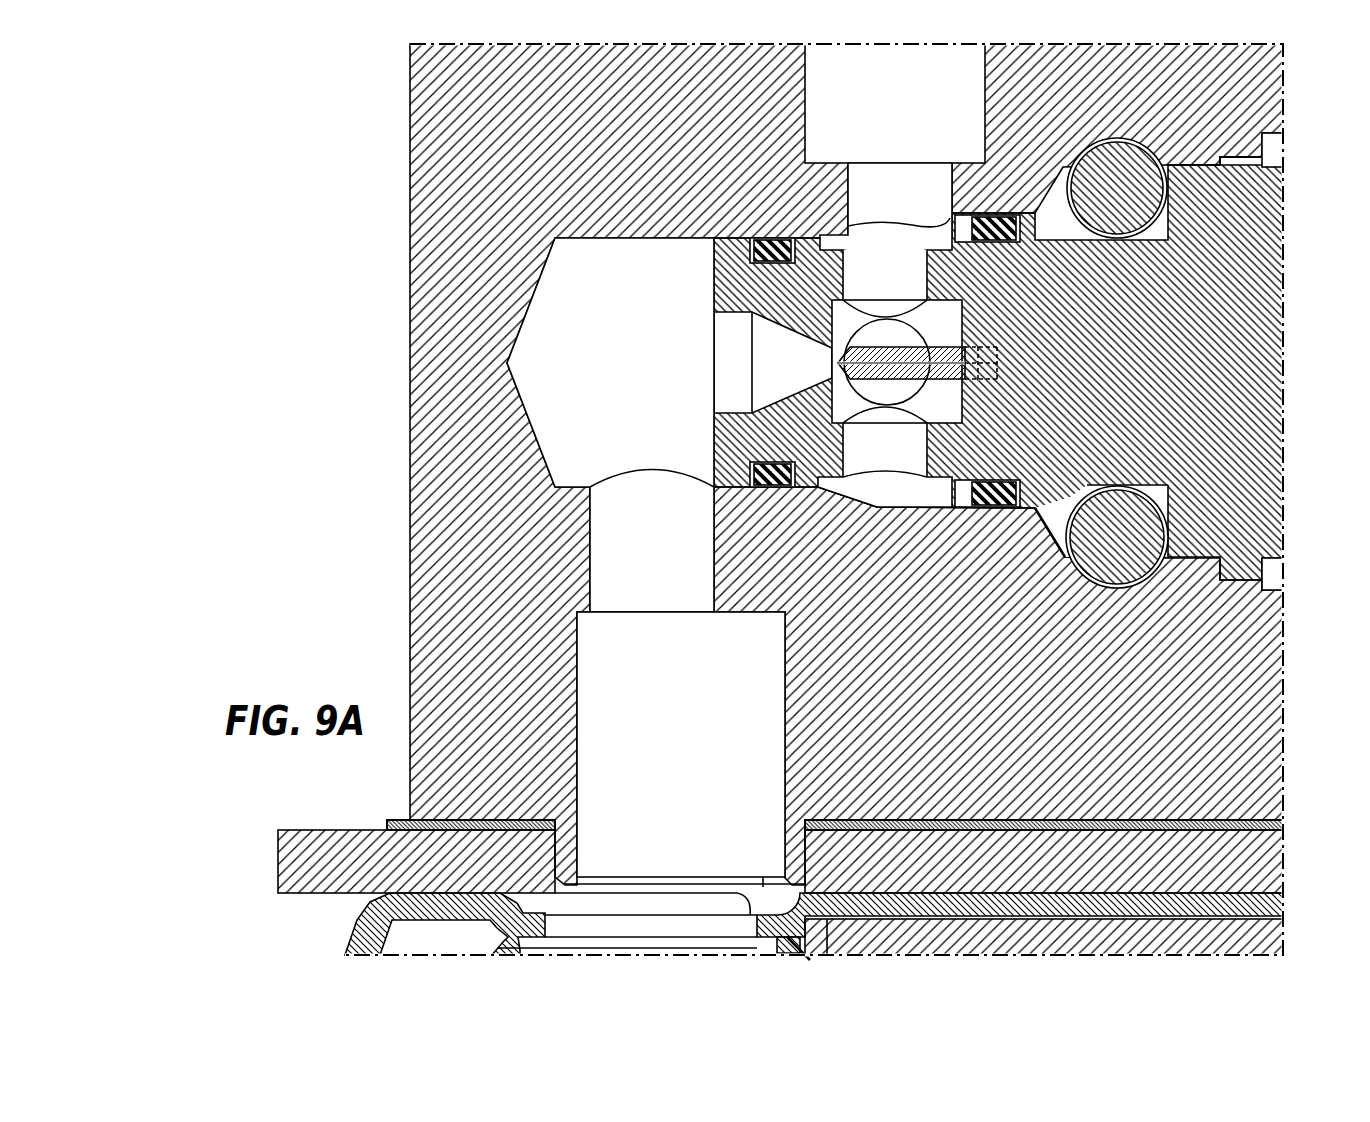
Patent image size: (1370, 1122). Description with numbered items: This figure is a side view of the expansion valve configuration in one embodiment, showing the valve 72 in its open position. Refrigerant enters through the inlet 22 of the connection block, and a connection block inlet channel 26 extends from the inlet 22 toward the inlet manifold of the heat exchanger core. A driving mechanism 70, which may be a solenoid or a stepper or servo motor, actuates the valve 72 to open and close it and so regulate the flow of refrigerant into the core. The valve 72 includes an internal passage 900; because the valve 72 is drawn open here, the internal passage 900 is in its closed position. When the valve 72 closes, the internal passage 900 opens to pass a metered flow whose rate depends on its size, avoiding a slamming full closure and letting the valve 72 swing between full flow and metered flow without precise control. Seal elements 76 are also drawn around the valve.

The inlet 22 is at (822, 102).
The connection block inlet channel 26 is at (613, 685).
The driving mechanism 70 is at (1225, 370).
The valve 72 is at (945, 335).
The seal 76 is at (765, 228).
The internal passage 900 is at (975, 380).